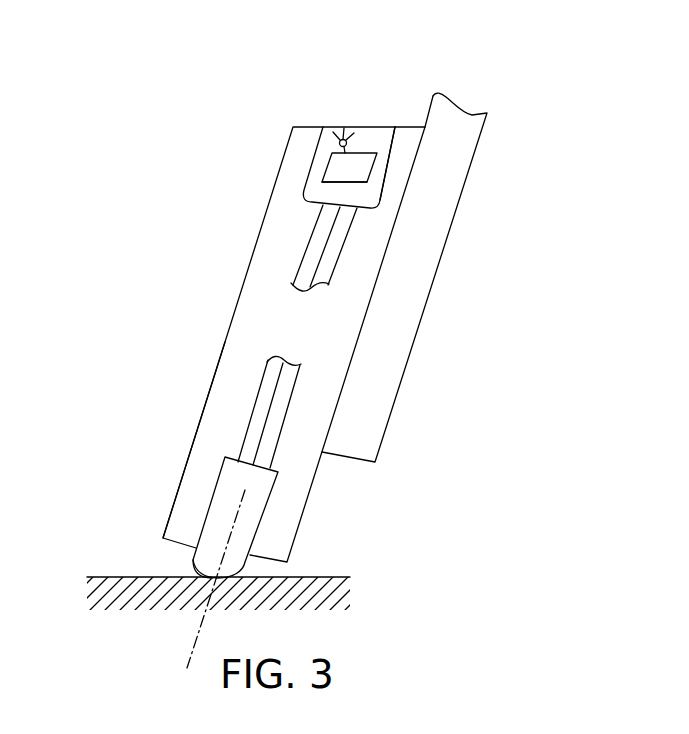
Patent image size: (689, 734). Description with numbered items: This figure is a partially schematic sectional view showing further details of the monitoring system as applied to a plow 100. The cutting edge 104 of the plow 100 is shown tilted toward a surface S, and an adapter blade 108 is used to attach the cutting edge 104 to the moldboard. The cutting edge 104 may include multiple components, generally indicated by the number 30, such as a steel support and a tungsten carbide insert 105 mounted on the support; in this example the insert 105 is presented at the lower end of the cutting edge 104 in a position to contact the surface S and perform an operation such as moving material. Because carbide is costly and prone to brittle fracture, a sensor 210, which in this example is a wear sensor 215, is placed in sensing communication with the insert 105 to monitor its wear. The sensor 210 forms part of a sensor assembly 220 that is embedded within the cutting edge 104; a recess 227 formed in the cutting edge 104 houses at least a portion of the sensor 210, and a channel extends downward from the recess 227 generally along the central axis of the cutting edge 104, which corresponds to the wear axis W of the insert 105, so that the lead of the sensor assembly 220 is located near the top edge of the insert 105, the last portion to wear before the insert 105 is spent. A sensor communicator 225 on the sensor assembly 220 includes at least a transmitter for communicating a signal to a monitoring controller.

The plow 100 is at (216, 362).
The cutting edge 104 is at (170, 513).
The tungsten carbide insert 105 is at (191, 568).
The adapter blade 108 is at (368, 419).
The component 30 is at (249, 530).
The sensor 210 is at (340, 172).
The wear sensor 215 is at (336, 176).
The sensor assembly 220 is at (383, 177).
The sensor communicator 225 is at (352, 148).
The recess 227 is at (393, 149).
The surface S is at (327, 577).
The wear axis W is at (194, 640).